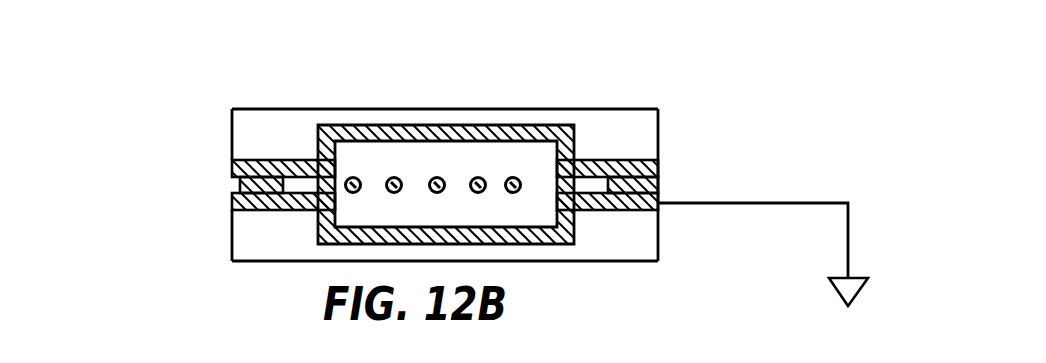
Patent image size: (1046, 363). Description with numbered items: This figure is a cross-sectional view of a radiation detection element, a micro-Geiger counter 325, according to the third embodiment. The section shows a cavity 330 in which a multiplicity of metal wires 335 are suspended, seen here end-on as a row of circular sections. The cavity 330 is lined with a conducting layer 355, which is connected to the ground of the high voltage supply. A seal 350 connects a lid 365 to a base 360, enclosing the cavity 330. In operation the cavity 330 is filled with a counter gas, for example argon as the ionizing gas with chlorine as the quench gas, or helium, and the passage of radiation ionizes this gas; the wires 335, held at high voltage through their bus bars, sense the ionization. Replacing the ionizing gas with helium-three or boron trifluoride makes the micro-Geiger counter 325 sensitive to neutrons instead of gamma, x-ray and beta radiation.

The micro-Geiger counter 325 is at (134, 108).
The cavity 330 is at (360, 210).
The metal wires 335 is at (394, 185).
The seal 350 is at (650, 186).
The conducting layer 355 is at (237, 202).
The base 360 is at (643, 237).
The lid 365 is at (642, 127).